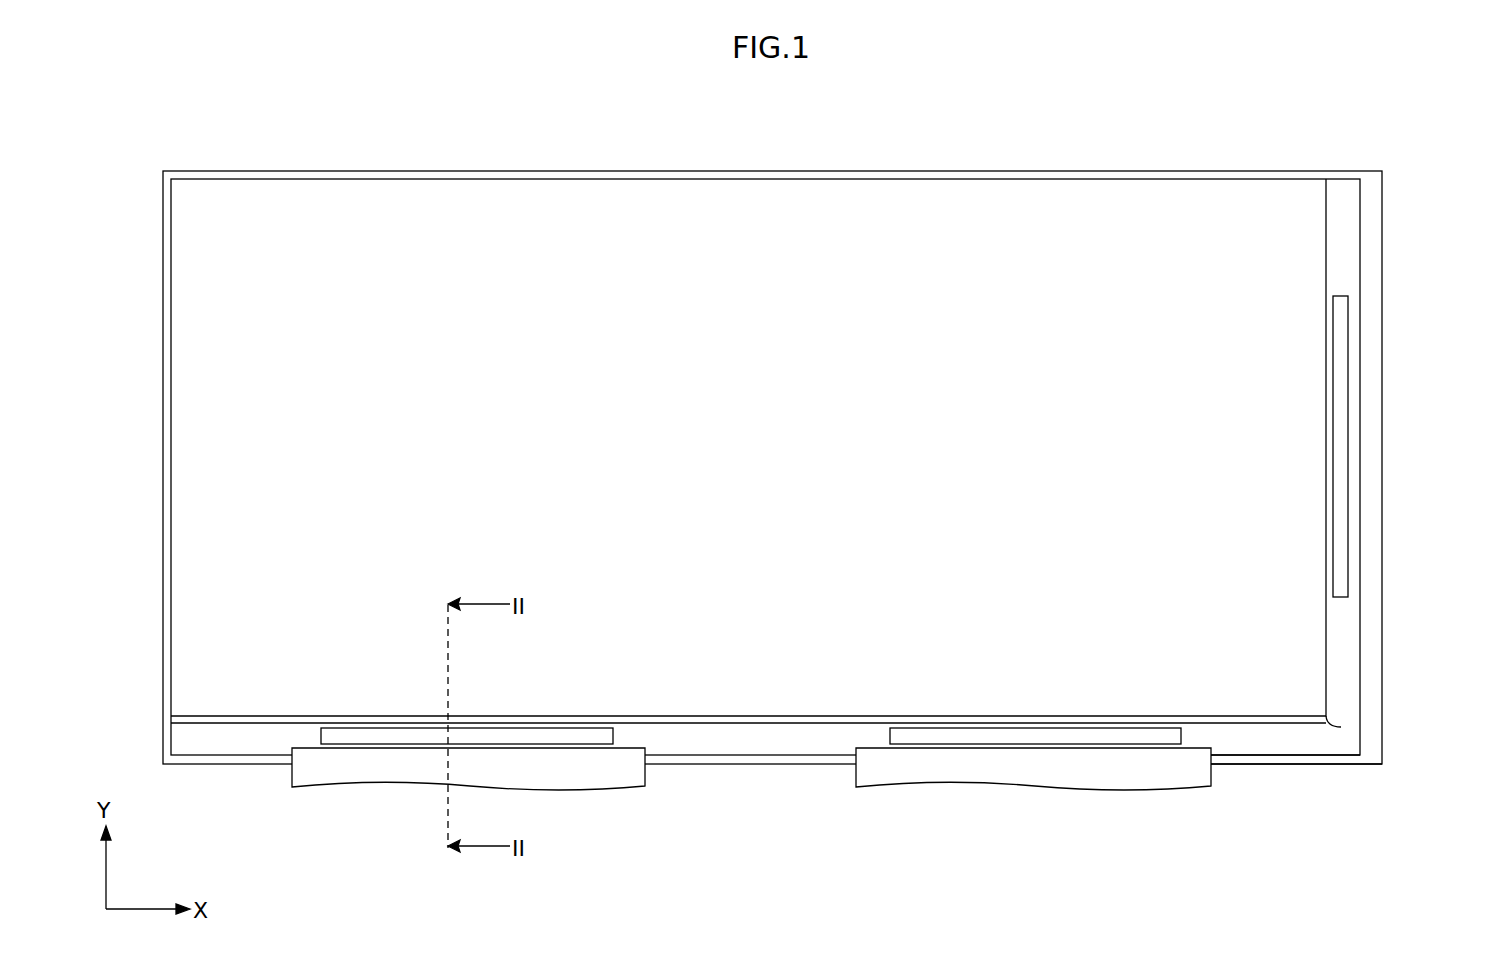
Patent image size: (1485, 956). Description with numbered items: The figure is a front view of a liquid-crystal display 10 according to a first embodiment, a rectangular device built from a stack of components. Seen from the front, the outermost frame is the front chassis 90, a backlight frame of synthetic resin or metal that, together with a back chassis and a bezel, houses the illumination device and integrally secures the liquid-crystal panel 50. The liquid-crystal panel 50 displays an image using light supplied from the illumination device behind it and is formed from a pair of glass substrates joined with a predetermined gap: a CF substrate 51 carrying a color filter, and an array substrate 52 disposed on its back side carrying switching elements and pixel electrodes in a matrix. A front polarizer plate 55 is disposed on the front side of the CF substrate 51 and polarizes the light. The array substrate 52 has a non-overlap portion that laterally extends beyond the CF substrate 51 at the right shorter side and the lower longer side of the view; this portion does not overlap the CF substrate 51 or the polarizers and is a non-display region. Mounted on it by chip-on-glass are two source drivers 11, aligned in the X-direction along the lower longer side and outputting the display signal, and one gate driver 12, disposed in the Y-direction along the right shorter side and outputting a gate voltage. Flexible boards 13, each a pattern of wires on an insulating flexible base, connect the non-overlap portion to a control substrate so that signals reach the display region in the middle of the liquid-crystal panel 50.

The liquid-crystal display 10 is at (1292, 92).
The front chassis 90 is at (1372, 273).
The liquid-crystal panel 50 is at (1350, 197).
The front polarizer plate 55 is at (1290, 636).
The CF substrate 51 is at (1341, 727).
The gate driver 12 is at (1340, 428).
The array substrate 52 is at (1340, 742).
The flexible board 13 is at (561, 770).
The source driver 11 is at (593, 735).